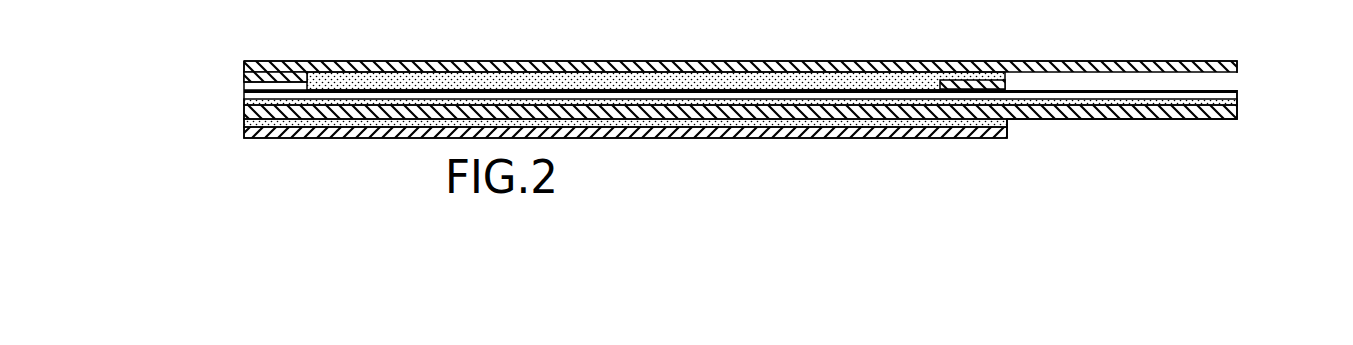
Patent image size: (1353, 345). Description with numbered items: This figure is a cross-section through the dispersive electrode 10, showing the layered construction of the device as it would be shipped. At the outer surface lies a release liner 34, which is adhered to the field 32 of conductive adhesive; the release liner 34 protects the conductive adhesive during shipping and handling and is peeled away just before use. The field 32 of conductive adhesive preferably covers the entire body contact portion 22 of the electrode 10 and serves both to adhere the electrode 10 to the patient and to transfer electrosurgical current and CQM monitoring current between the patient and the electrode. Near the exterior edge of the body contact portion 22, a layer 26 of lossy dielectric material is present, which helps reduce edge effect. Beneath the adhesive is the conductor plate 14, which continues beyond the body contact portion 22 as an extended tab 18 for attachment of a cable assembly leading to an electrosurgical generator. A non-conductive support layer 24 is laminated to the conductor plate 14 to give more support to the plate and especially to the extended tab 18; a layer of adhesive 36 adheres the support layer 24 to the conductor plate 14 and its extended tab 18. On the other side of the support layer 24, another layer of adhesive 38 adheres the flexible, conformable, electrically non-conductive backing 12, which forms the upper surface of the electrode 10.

The dispersive electrode 10 is at (1072, 147).
The electrically non-conductive backing 12 is at (667, 140).
The conductor plate 14 is at (243, 95).
The extended tab 18 is at (1218, 86).
The body contact portion 22 is at (979, 148).
The non-conductive support layer 24 is at (1187, 122).
The layer of lossy dielectric material 26 is at (243, 83).
The field of conductive adhesive 32 is at (363, 82).
The release liner 34 is at (423, 62).
The layer of adhesive 36 is at (1237, 105).
The layer of adhesive 38 is at (243, 120).